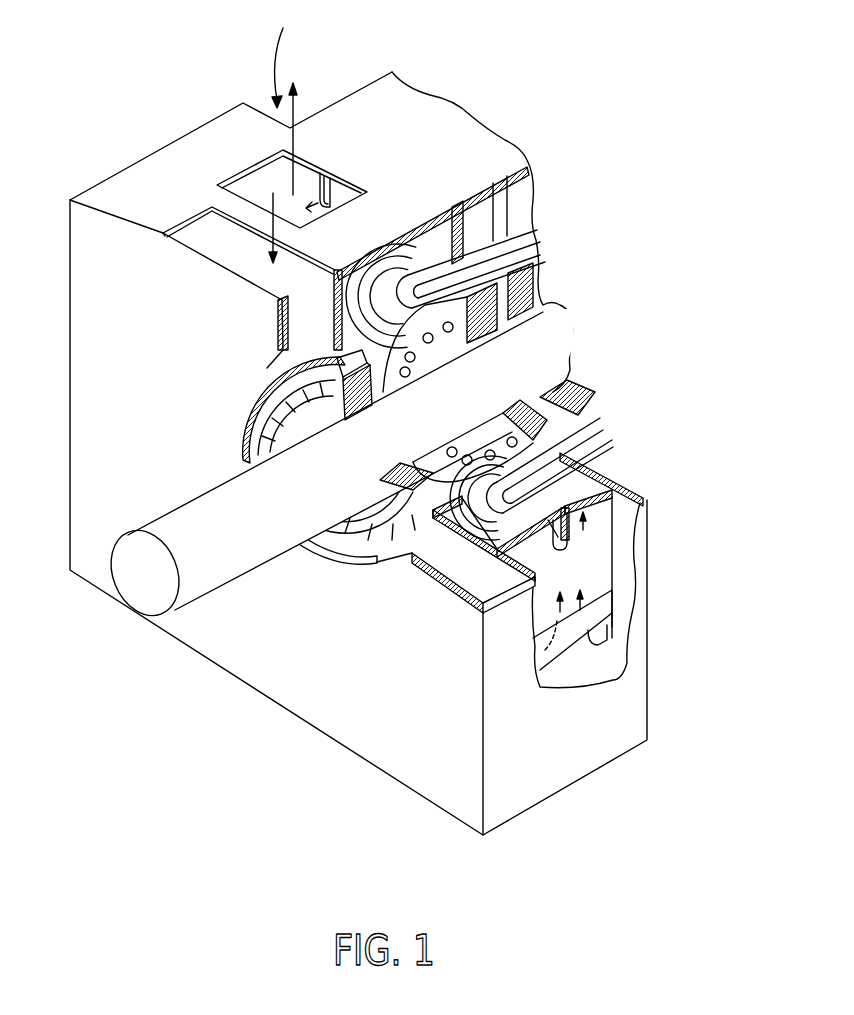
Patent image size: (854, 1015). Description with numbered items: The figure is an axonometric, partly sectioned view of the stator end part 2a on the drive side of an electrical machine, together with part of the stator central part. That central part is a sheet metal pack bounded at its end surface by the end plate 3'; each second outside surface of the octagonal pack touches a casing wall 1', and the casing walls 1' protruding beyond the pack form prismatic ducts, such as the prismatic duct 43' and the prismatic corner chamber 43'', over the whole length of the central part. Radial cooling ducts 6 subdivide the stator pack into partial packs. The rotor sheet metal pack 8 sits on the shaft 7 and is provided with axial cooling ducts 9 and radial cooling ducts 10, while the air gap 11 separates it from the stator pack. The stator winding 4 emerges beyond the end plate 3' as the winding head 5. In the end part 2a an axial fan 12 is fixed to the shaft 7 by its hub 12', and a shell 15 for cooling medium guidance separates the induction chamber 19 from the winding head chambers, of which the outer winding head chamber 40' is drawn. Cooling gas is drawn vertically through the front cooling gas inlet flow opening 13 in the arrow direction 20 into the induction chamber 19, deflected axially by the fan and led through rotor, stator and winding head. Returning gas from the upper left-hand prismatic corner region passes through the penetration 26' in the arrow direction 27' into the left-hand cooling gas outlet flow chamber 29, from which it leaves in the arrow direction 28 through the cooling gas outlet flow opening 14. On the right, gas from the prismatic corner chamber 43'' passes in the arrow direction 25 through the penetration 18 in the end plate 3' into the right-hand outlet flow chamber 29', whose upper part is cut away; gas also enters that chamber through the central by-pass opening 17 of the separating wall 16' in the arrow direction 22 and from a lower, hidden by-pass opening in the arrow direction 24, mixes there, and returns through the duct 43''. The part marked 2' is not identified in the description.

The casing wall 1' is at (397, 50).
The top surface of housing 2' is at (131, 129).
The stator end part 2a is at (284, 134).
The end plate 3' is at (431, 336).
The stator winding 4 is at (517, 235).
The winding head 5 is at (405, 278).
The radial cooling ducts 6 is at (497, 217).
The shaft 7 is at (540, 333).
The rotor sheet metal pack 8 is at (548, 388).
The axial cooling ducts 9 is at (515, 295).
The radial cooling ducts 10 is at (512, 283).
The air gap 11 is at (508, 258).
The axial fan 12 is at (223, 458).
The hub 12' is at (220, 460).
The cooling gas inlet flow opening 13 is at (175, 224).
The cooling gas outlet flow opening 14 is at (282, 148).
The shell 15 is at (337, 349).
The separating wall 16' is at (653, 562).
The central by-pass opening 17 is at (568, 517).
The penetration 18 is at (607, 638).
The induction chamber 19 is at (238, 252).
The arrow direction 20 is at (283, 217).
The arrow direction 22 is at (587, 535).
The arrow direction 24 is at (560, 592).
The arrow direction 25 is at (593, 643).
The upper left-hand penetration 26' is at (407, 127).
The arrow direction 27' is at (387, 126).
The arrow direction 28 is at (293, 108).
The left-hand cooling gas outlet flow chamber 29 is at (189, 136).
The right-hand cooling gas outlet flow chamber 29' is at (633, 609).
The outer winding head chamber 40' is at (423, 627).
The prismatic duct 43' is at (349, 110).
The prismatic duct 43'' is at (636, 634).